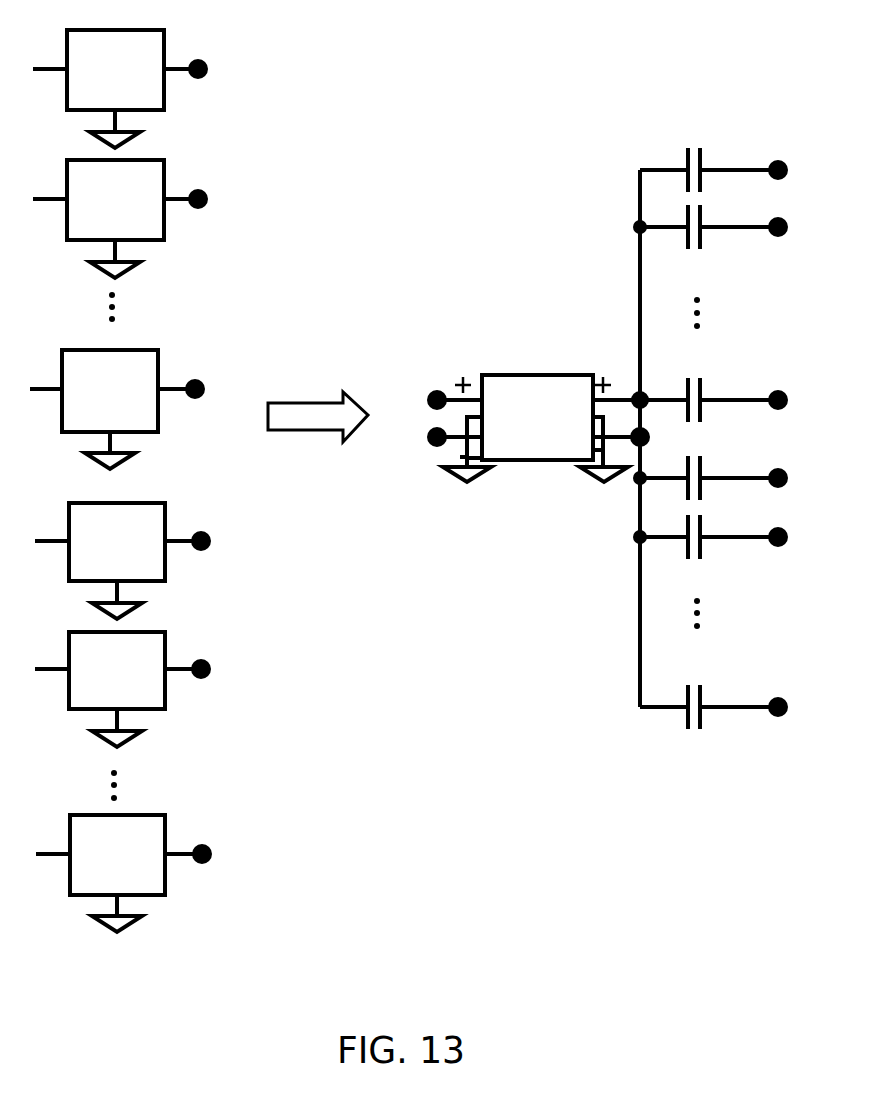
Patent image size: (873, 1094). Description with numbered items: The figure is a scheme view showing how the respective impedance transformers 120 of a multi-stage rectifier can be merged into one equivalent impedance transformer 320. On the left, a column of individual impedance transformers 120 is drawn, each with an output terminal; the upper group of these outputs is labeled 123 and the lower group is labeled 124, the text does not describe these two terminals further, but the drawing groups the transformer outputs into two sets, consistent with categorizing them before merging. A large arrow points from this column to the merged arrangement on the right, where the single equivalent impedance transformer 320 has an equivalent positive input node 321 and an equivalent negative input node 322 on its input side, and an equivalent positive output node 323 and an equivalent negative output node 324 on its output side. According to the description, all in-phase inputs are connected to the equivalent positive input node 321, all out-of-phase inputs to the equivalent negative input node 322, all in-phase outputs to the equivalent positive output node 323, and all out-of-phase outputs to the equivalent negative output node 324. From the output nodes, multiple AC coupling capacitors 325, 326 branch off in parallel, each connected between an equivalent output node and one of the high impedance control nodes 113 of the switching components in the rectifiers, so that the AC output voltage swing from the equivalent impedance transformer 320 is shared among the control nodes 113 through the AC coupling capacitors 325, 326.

The high impedance control node 113 is at (764, 438).
The impedance transformer 120 is at (97, 481).
The first output terminal 123 is at (204, 230).
The second output terminal 124 is at (208, 698).
The equivalent impedance transformer 320 is at (535, 428).
The equivalent positive input node 321 is at (435, 395).
The equivalent negative input node 322 is at (435, 437).
The equivalent positive output node 323 is at (620, 379).
The equivalent negative output node 324 is at (623, 425).
The AC coupling capacitor 325 is at (691, 280).
The AC coupling capacitor 326 is at (691, 588).